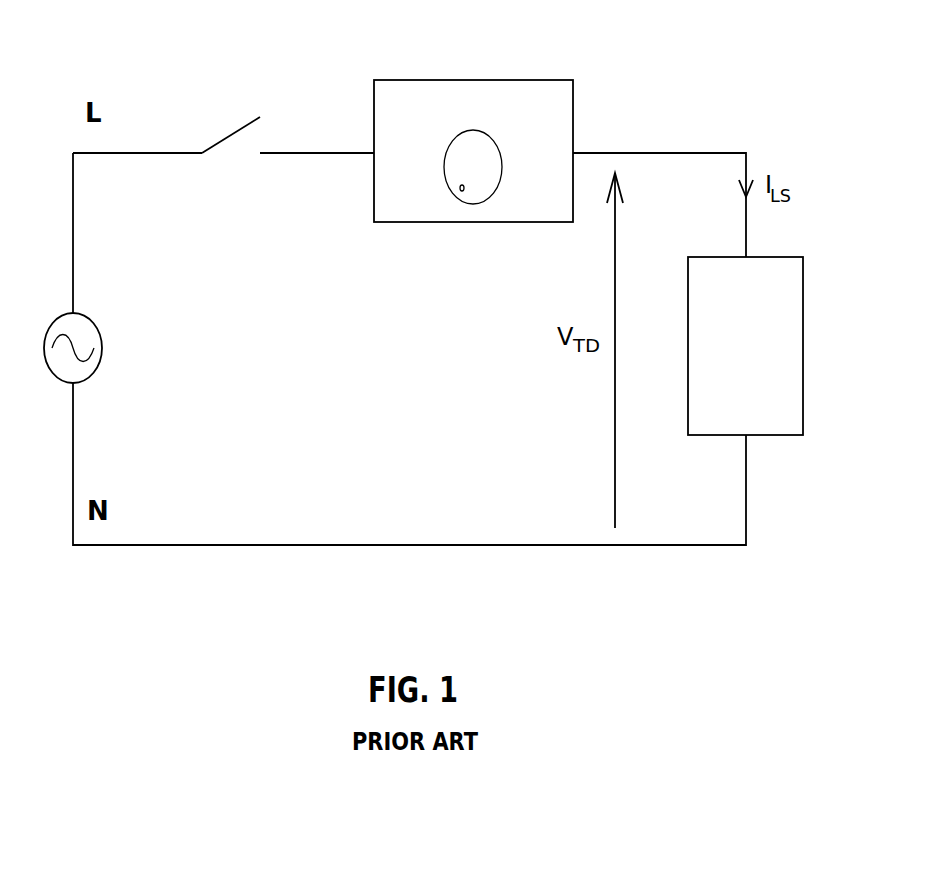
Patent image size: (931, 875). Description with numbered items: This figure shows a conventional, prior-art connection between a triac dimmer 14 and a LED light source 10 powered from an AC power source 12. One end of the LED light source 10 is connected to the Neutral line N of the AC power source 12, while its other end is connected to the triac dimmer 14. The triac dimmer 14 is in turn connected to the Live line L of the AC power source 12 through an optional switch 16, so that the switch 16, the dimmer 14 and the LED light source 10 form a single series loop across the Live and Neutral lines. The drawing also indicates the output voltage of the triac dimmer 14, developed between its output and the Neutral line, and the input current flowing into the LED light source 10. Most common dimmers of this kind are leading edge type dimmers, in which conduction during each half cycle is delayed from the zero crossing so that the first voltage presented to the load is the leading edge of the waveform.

The LED light source 10 is at (807, 305).
The AC power source 12 is at (98, 322).
The triac dimmer 14 is at (502, 68).
The switch 16 is at (213, 128).